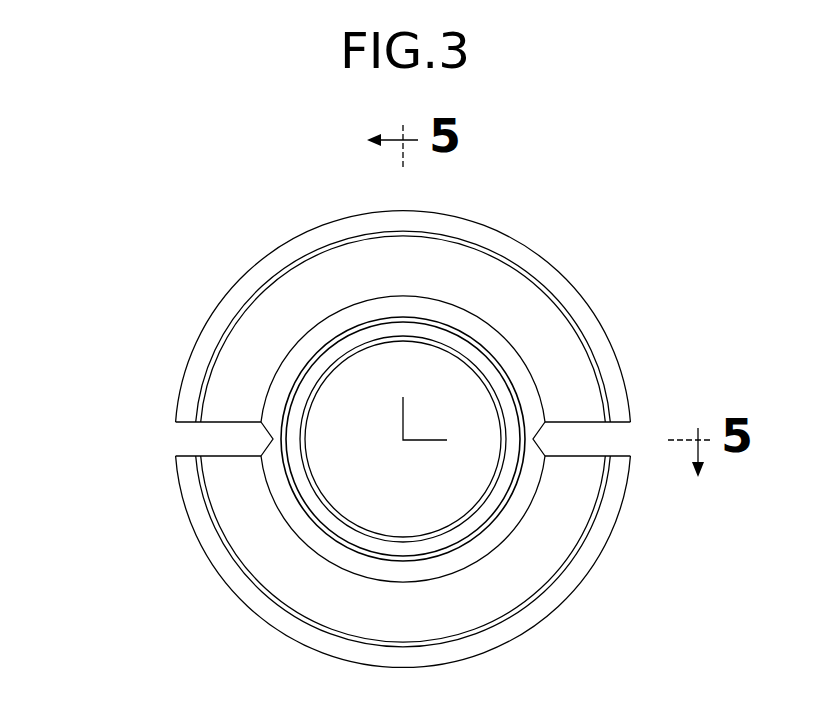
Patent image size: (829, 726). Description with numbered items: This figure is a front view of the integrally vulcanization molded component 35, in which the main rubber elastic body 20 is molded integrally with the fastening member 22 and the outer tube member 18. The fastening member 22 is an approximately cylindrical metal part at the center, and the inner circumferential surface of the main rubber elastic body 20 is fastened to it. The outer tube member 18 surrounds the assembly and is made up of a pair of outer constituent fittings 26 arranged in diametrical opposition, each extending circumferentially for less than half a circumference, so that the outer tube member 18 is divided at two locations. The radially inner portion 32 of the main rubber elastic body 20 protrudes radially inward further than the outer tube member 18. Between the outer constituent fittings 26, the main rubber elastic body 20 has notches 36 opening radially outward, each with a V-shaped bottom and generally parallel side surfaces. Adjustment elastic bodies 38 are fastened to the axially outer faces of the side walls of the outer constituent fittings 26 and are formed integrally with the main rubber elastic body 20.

The outer tube member 18 is at (84, 393).
The main rubber elastic body 20 is at (524, 524).
The fastening member 22 is at (362, 338).
The outer constituent fitting 26 is at (168, 380).
The radially inner portion 32 is at (465, 560).
The integrally vulcanization molded component 35 is at (596, 234).
The notch 36 is at (562, 423).
The adjustment elastic body 38 is at (260, 343).